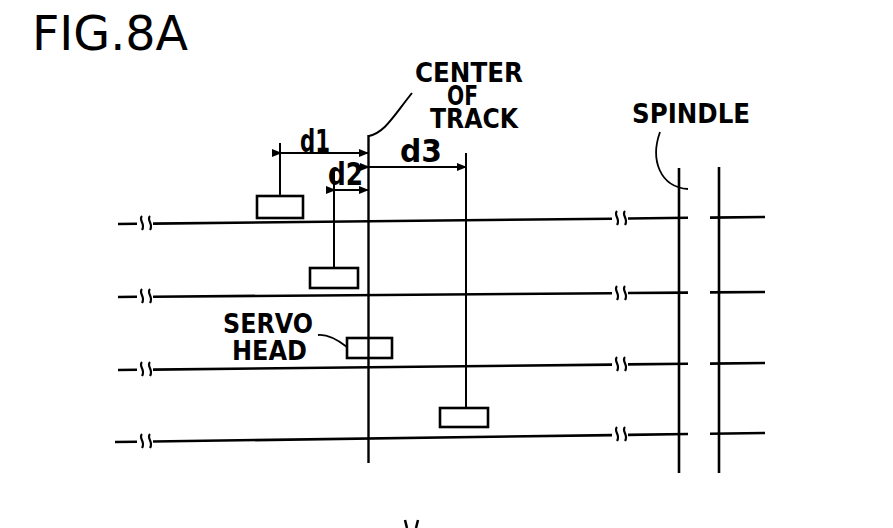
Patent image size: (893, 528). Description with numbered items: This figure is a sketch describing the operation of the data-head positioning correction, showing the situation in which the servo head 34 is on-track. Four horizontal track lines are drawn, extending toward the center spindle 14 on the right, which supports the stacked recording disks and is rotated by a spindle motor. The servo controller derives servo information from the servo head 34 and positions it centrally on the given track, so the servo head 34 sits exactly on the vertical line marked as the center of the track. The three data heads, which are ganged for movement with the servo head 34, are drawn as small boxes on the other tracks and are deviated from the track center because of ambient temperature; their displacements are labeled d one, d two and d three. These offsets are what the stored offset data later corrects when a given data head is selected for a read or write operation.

The center spindle 14 is at (708, 197).
The servo head 34 is at (392, 338).